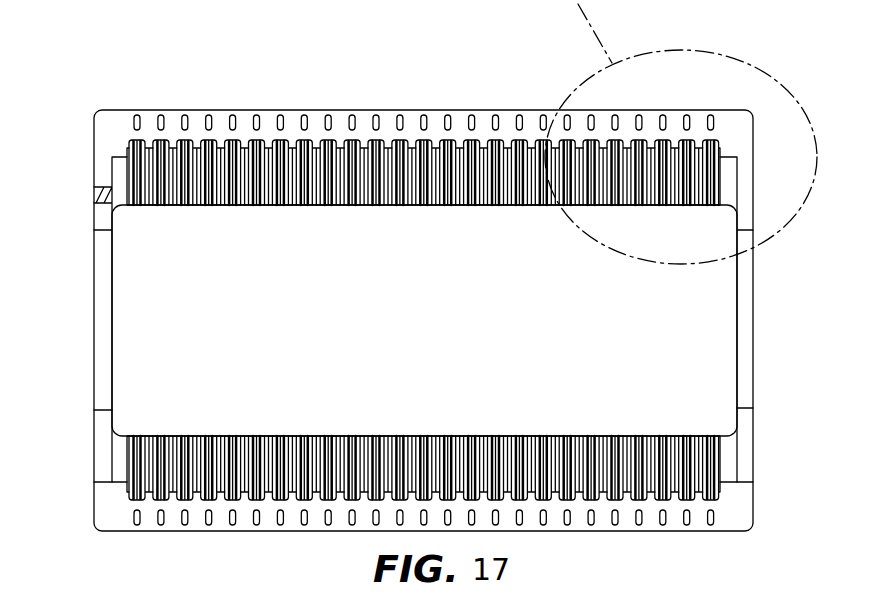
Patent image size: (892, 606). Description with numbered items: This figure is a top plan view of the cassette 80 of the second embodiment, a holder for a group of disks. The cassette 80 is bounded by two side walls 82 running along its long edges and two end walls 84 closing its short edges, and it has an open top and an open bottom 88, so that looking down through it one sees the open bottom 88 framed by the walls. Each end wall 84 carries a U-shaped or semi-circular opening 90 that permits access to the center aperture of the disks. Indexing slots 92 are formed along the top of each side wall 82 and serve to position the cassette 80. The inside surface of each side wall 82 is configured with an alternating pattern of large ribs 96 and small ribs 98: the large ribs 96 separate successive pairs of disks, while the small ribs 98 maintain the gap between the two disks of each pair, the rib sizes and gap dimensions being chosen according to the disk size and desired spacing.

The cassette 80 is at (424, 298).
The side wall 82 is at (176, 115).
The end wall 84 is at (100, 433).
The open bottom 88 is at (658, 353).
The U-shaped or semi-circular opening 90 is at (93, 303).
The indexing slot 92 is at (400, 111).
The large rib 96 is at (245, 207).
The small rib 98 is at (332, 207).